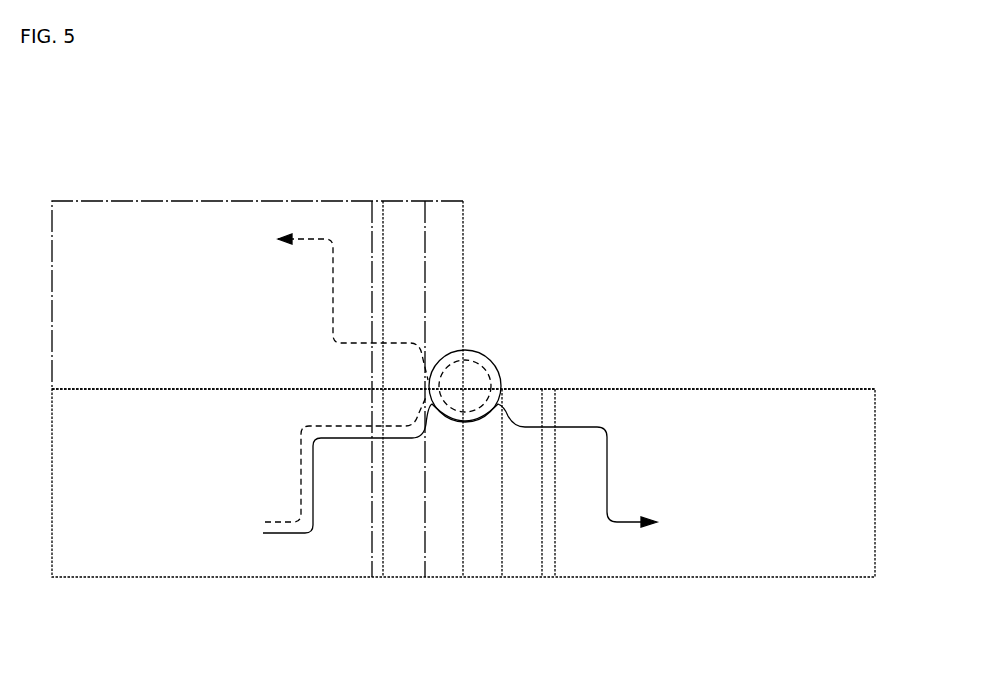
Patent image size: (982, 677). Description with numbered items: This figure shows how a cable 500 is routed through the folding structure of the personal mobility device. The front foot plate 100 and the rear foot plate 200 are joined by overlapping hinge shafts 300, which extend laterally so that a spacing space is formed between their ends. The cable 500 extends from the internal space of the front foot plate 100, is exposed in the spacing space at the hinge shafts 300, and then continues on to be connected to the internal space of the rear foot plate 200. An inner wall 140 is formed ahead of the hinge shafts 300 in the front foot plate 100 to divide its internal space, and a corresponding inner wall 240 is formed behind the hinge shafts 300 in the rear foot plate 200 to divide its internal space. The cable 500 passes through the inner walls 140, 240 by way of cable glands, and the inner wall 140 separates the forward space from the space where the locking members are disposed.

The front foot plate 100 is at (143, 550).
The rear foot plate 200 is at (248, 201).
The inner wall 140 is at (375, 560).
The inner wall 240 is at (548, 560).
The hinge shafts 300 is at (497, 357).
The cable 500 is at (310, 513).